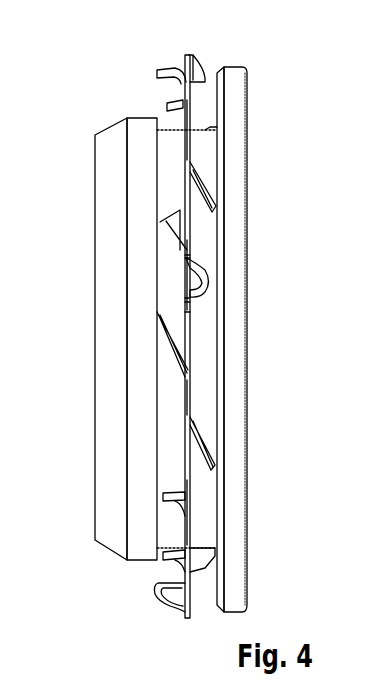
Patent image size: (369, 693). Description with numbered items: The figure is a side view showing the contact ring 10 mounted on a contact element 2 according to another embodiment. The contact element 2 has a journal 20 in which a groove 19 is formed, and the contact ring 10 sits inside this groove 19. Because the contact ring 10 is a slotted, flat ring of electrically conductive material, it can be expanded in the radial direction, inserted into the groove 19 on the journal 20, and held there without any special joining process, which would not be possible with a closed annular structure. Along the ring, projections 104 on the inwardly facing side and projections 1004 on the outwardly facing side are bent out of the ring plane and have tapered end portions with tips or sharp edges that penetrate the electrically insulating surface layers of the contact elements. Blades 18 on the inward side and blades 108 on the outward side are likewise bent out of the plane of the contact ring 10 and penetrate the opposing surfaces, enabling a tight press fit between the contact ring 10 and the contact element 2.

The contact element 2 is at (147, 83).
The groove 19 is at (160, 113).
The journal 20 is at (140, 172).
The blade 18 is at (160, 222).
The blade 108 is at (200, 282).
The projection 1004 is at (160, 332).
The projection 104 is at (190, 442).
The contact ring 10 is at (190, 522).